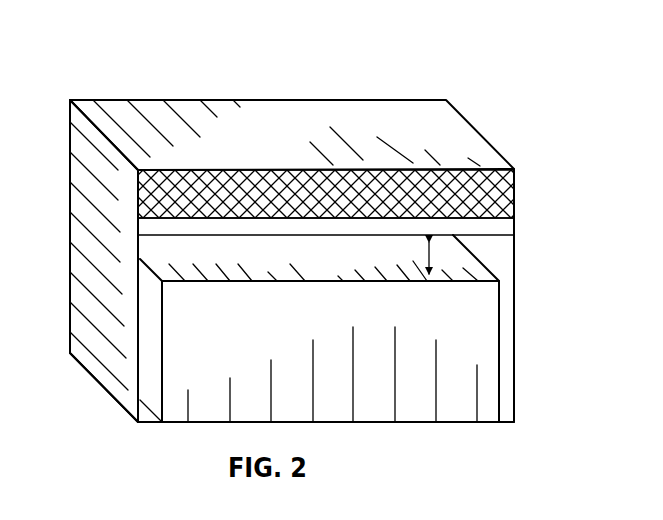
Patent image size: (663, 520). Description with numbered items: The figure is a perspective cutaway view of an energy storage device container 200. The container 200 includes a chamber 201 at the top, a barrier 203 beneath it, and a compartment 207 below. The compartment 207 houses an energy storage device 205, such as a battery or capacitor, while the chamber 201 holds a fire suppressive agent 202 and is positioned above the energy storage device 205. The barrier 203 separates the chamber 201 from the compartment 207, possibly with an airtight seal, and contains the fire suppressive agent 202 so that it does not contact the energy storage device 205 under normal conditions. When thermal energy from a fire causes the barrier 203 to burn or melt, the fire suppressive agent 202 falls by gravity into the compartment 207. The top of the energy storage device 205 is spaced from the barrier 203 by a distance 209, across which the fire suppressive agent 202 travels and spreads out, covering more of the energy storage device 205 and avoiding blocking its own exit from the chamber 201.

The energy storage device container 200 is at (470, 44).
The chamber 201 is at (487, 204).
The fire suppressive agent 202 is at (157, 191).
The barrier 203 is at (497, 230).
The energy storage device 205 is at (468, 318).
The compartment 207 is at (507, 380).
The distance 209 is at (430, 261).